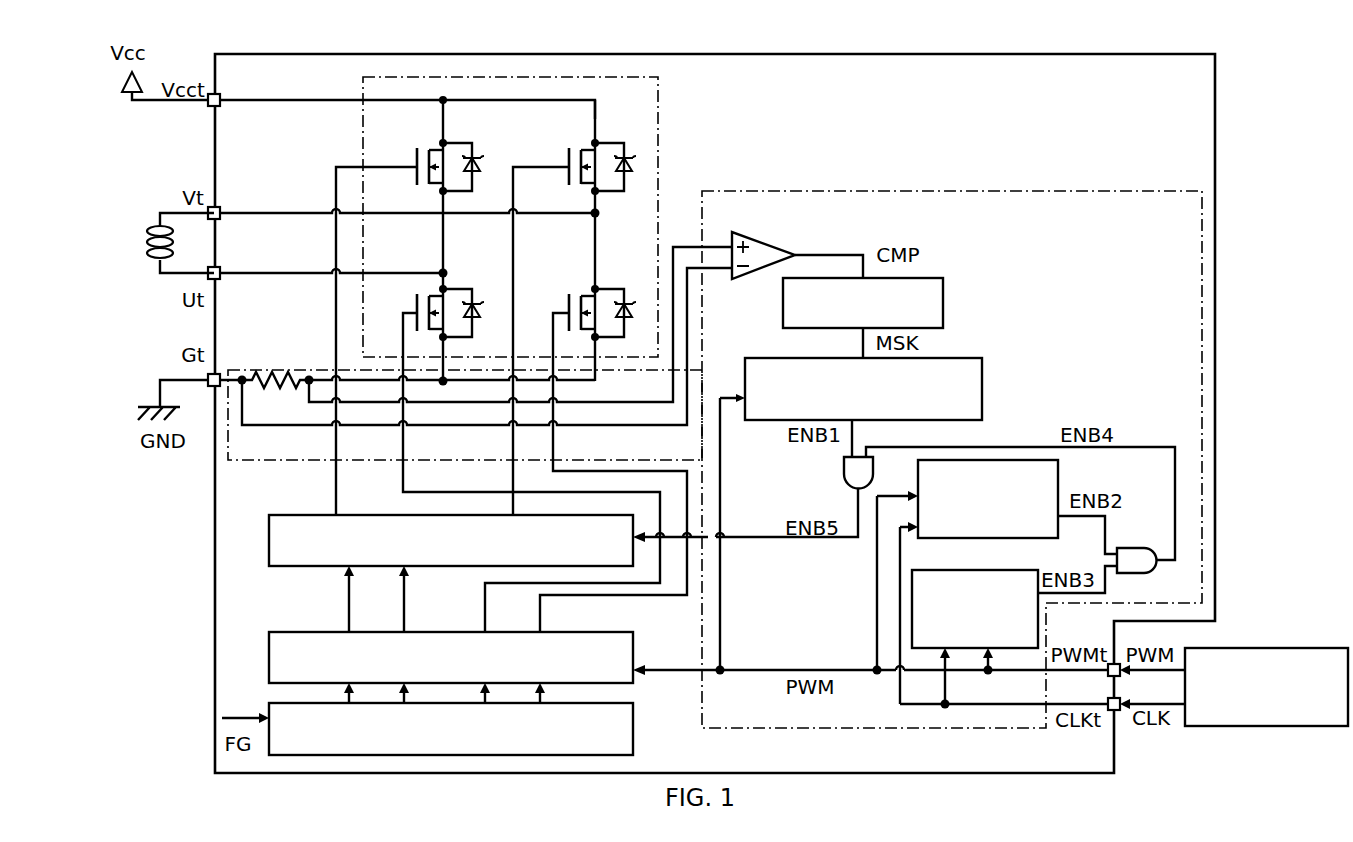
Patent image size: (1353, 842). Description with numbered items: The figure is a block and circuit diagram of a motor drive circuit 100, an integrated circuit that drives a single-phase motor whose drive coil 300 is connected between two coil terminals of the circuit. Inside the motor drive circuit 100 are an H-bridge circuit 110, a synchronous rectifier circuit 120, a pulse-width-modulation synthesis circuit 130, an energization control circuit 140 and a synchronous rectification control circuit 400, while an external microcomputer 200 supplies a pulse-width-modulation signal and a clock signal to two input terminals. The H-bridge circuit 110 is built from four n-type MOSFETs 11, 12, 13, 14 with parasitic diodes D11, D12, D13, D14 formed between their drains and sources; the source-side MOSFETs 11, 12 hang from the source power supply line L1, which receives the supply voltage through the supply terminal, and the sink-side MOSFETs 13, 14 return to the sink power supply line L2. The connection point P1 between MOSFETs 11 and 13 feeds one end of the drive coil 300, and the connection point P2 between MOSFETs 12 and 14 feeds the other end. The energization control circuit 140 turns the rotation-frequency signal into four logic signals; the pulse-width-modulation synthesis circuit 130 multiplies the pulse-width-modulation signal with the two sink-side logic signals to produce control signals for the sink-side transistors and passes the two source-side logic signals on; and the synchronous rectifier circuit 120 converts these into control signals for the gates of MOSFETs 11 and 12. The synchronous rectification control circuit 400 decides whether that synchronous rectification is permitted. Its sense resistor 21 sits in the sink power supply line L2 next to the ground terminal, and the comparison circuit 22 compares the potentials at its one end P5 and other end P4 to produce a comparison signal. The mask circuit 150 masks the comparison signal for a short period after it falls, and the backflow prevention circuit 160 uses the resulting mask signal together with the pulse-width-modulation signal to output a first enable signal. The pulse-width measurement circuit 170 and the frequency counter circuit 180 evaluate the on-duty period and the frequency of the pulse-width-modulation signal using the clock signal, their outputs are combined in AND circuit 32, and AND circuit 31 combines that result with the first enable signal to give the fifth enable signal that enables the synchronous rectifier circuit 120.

The motor drive circuit 100 is at (891, 53).
The H-bridge circuit 110 is at (659, 103).
The synchronous rectification control circuit 400 is at (879, 189).
The drive coil 300 is at (148, 232).
The microcomputer 200 is at (1278, 649).
The n-type MOSFET 11 is at (418, 159).
The n-type MOSFET 12 is at (570, 161).
The n-type MOSFET 13 is at (418, 311).
The n-type MOSFET 14 is at (570, 307).
The parasitic diode D11 is at (478, 153).
The parasitic diode D12 is at (613, 153).
The parasitic diode D13 is at (473, 298).
The parasitic diode D14 is at (615, 298).
The sense resistor 21 is at (269, 372).
The comparison circuit 22 is at (767, 243).
The AND circuit 31 is at (849, 482).
The AND circuit 32 is at (1128, 552).
The synchronous rectifier circuit 120 is at (268, 515).
The PWM synthesis circuit 130 is at (269, 632).
The energization control circuit 140 is at (269, 703).
The mask circuit 150 is at (943, 302).
The backflow prevention circuit 160 is at (980, 390).
The pulse-width measurement circuit 170 is at (1057, 487).
The frequency counter circuit 180 is at (982, 570).
The source power supply line L1 is at (336, 99).
The sink power supply line L2 is at (600, 381).
The connection point P1 is at (440, 273).
The connection point P2 is at (593, 214).
The other end P4 is at (309, 374).
The one end P5 is at (241, 374).